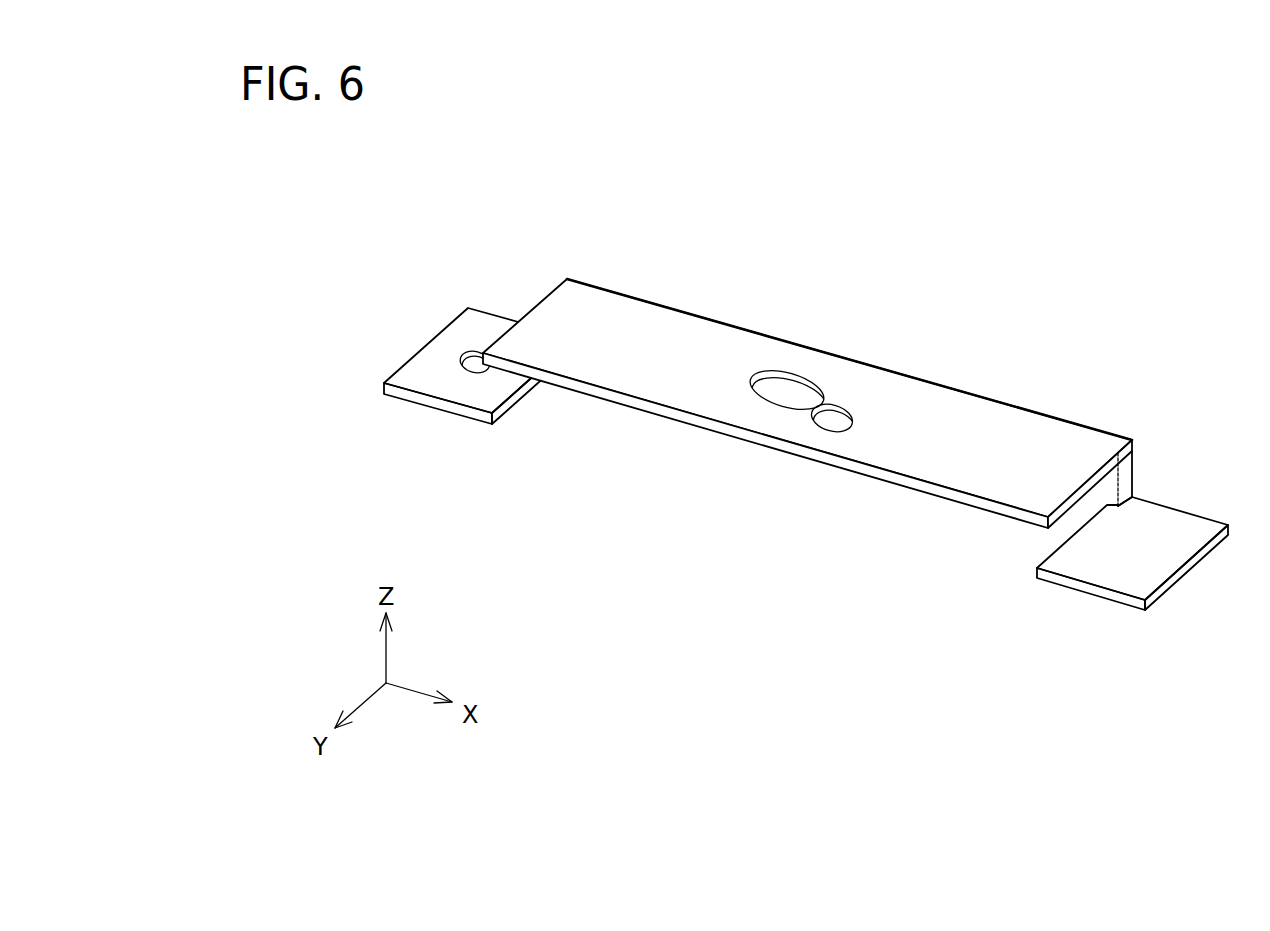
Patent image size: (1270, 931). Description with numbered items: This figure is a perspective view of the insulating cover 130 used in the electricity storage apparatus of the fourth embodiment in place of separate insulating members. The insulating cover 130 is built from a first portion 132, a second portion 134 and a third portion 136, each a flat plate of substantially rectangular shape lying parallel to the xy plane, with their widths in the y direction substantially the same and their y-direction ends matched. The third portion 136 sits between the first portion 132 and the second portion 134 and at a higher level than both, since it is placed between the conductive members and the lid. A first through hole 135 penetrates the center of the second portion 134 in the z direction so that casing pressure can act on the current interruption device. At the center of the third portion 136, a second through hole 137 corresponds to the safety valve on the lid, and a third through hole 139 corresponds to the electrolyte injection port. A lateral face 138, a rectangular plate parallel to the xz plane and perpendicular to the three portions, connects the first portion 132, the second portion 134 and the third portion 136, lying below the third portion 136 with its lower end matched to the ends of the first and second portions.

The insulating cover 130 is at (992, 327).
The first portion 132 is at (1180, 532).
The second portion 134 is at (425, 370).
The first through hole 135 is at (472, 353).
The third portion 136 is at (907, 400).
The second through hole 137 is at (770, 375).
The lateral face 138 is at (1126, 478).
The third through hole 139 is at (837, 413).